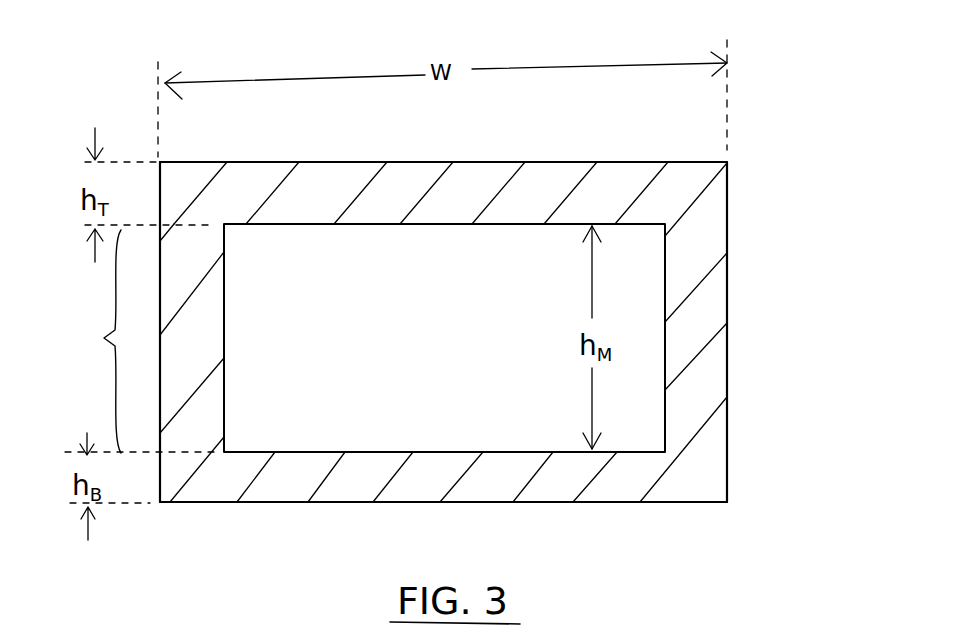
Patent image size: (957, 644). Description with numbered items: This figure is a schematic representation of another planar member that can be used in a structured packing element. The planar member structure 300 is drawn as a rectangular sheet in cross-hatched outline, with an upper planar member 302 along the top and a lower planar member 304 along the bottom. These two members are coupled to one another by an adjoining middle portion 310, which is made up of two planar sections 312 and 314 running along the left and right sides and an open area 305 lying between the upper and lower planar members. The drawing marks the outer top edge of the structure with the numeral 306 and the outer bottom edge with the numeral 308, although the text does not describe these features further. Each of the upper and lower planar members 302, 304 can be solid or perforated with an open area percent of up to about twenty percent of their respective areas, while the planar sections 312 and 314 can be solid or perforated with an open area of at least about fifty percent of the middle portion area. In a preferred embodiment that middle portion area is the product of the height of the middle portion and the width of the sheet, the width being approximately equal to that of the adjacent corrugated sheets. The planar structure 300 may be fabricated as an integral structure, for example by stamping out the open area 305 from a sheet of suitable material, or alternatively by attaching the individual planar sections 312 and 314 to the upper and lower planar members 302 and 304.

The planar member structure 300 is at (866, 352).
The upper planar member 302 is at (482, 190).
The lower planar member 304 is at (270, 490).
The open area 305 is at (535, 362).
The top surface 306 is at (625, 160).
The bottom surface 308 is at (618, 504).
The middle portion 310 is at (77, 341).
The planar section 312 is at (210, 340).
The planar section 314 is at (728, 259).